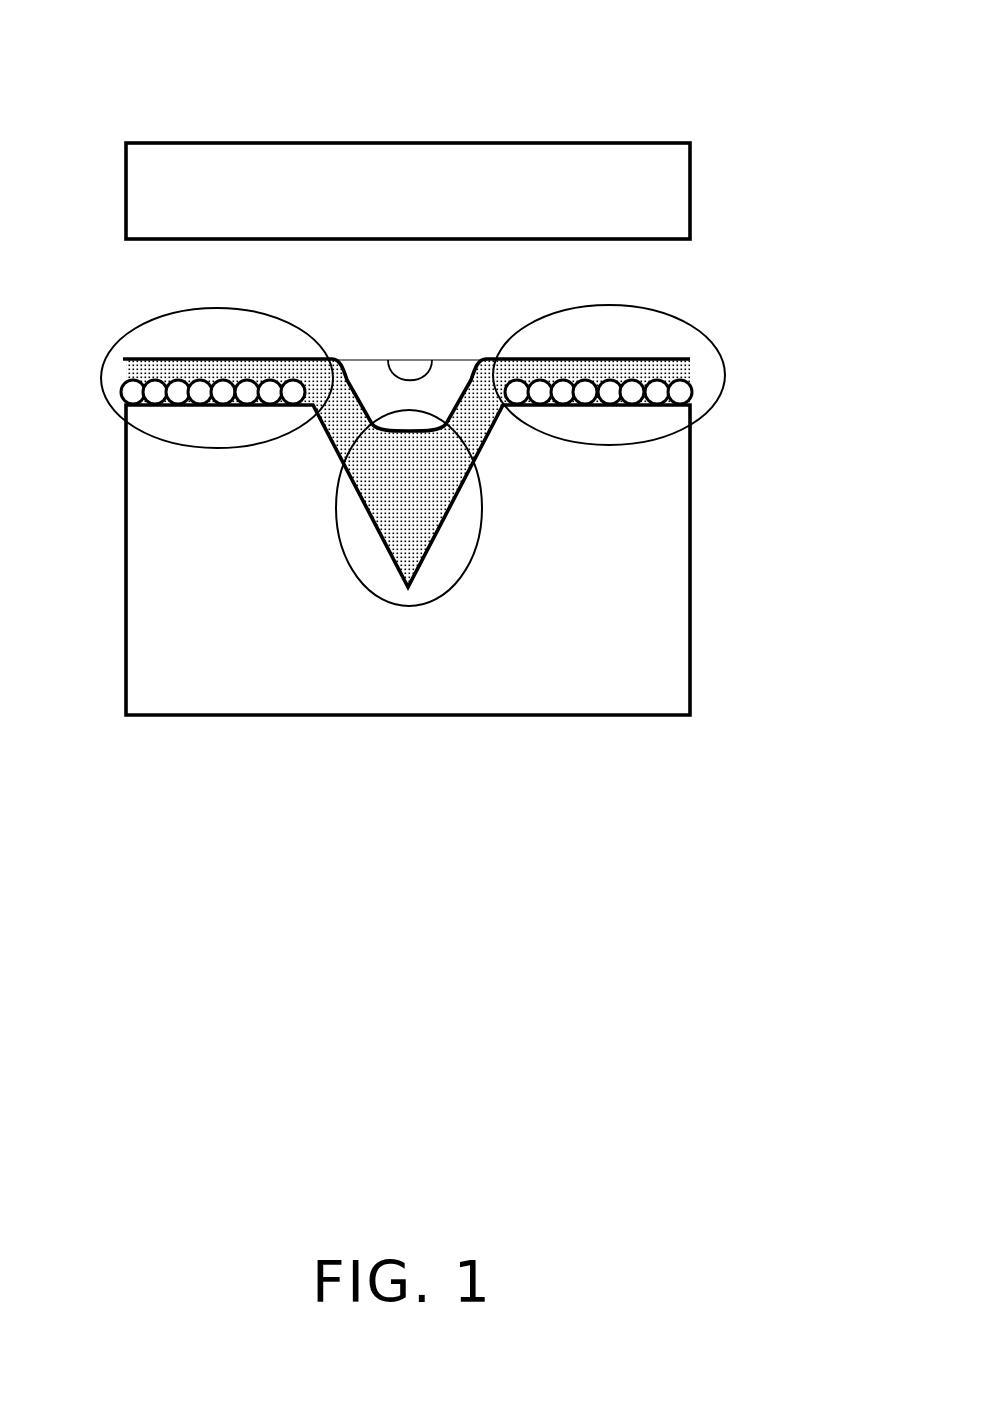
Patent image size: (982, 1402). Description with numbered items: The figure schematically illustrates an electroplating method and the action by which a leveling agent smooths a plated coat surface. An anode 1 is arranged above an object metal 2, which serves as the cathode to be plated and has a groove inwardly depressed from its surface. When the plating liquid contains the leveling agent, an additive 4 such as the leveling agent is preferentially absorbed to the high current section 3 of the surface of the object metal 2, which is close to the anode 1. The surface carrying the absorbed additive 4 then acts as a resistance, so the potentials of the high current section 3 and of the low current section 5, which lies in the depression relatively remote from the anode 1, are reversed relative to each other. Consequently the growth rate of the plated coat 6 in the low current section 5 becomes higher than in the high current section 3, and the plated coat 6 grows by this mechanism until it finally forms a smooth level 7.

The anode 1 is at (428, 143).
The object metal 2 is at (245, 692).
The high current section 3 is at (125, 333).
The additive 4 is at (680, 393).
The low current section 5 is at (447, 591).
The plated coat 6 is at (497, 437).
The smooth level 7 is at (432, 360).